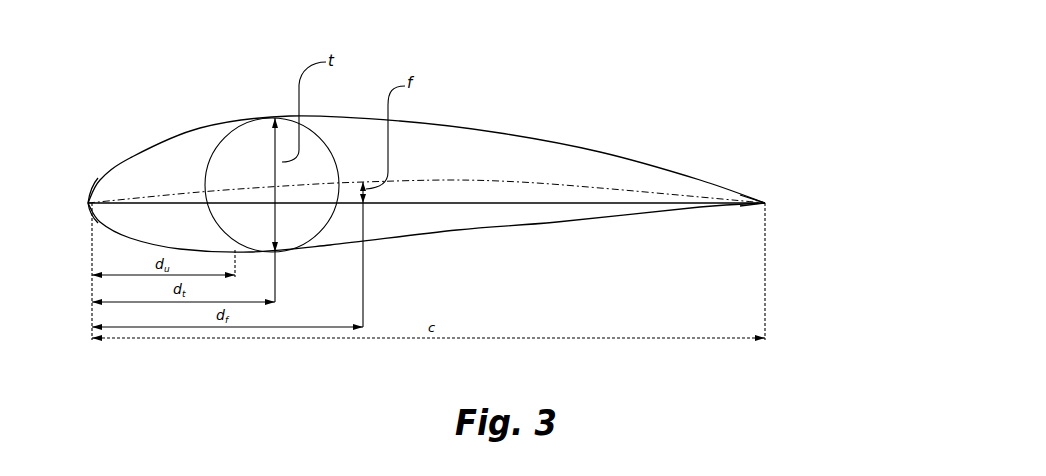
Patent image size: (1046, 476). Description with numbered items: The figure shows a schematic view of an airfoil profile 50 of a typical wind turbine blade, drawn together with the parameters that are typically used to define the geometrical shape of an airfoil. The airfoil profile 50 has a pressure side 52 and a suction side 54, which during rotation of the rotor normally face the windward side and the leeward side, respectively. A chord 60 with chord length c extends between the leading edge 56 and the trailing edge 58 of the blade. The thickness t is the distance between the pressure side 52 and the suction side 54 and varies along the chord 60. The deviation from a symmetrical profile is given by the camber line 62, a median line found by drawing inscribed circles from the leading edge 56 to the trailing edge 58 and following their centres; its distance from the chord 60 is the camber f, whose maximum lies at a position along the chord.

The airfoil profile 50 is at (406, 49).
The pressure side 52 is at (557, 225).
The suction side 54 is at (511, 134).
The leading edge 56 is at (88, 202).
The trailing edge 58 is at (765, 200).
The chord 60 is at (593, 201).
The camber line 62 is at (418, 181).